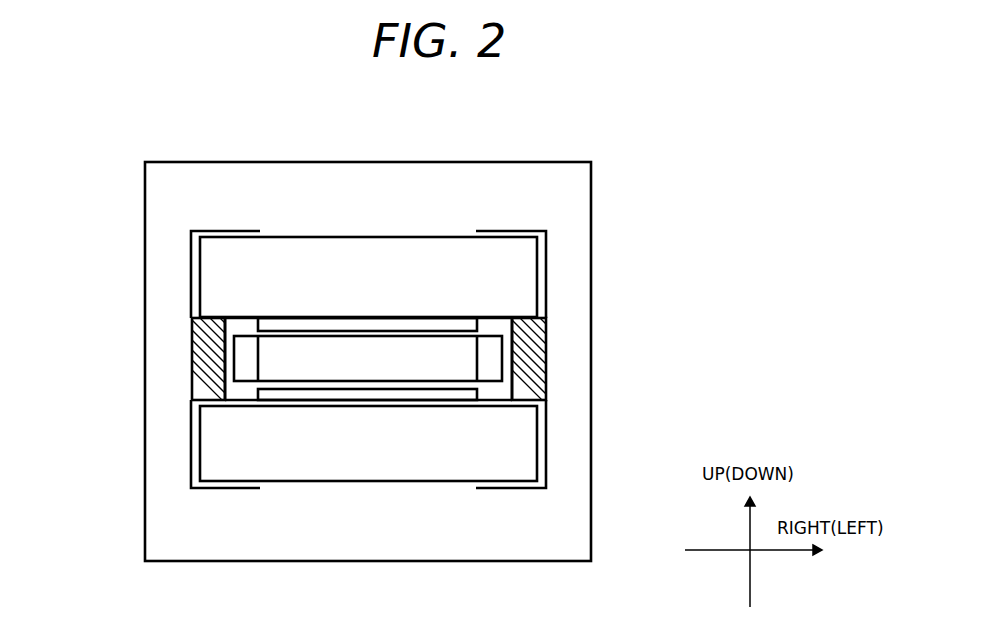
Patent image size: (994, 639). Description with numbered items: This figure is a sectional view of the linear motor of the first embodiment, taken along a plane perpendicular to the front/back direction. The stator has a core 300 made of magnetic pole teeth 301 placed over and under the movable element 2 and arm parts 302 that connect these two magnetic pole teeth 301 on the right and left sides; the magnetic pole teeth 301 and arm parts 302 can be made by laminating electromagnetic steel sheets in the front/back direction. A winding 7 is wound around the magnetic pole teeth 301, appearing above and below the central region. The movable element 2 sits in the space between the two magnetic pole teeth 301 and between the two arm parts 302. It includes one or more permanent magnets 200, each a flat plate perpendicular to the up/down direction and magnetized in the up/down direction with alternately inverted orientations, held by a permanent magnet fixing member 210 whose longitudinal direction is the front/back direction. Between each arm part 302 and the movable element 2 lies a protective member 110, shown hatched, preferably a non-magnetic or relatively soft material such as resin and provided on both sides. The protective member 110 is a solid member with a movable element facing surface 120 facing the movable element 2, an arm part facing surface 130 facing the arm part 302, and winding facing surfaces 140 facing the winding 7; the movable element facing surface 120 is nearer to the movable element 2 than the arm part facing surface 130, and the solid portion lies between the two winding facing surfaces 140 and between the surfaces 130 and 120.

The core 300 is at (593, 168).
The arm part 302 is at (165, 488).
The winding 7 is at (393, 257).
The magnetic pole tooth 301 is at (313, 325).
The permanent magnet 200 is at (447, 350).
The movable element 2 is at (490, 372).
The permanent magnet fixing member 210 is at (533, 402).
The movable element facing surface 120 is at (230, 383).
The protective member 110 is at (192, 345).
The arm part facing surface 130 is at (192, 377).
The winding facing surface 140 is at (192, 313).